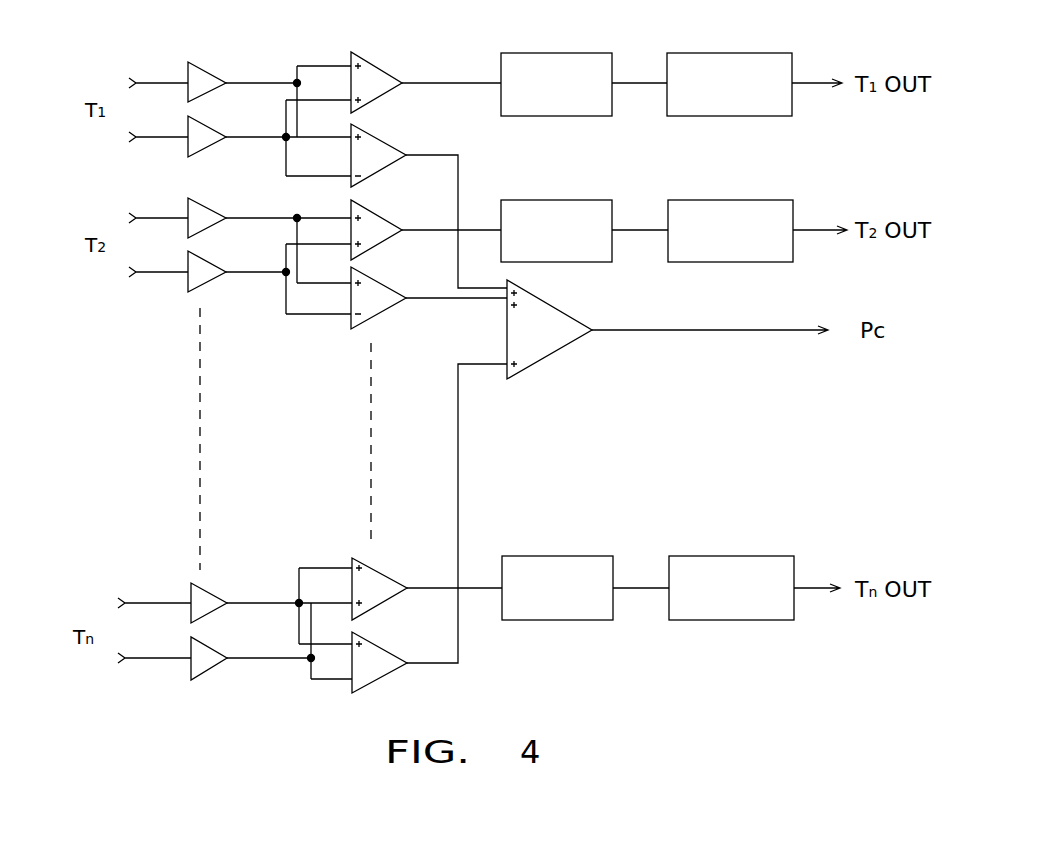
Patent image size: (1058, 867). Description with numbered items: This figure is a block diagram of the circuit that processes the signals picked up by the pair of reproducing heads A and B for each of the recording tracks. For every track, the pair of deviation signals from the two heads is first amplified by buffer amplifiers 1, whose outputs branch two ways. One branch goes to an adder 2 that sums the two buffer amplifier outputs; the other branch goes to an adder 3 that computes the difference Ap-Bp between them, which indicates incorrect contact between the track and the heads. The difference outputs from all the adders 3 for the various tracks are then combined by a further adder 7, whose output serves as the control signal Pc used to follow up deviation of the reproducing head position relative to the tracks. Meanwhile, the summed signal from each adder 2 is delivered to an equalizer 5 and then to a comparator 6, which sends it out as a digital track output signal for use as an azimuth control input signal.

The buffer amplifier 1 is at (212, 73).
The adder 2 is at (383, 71).
The adder 3 is at (389, 143).
The equalizer 5 is at (613, 75).
The comparator 6 is at (793, 63).
The adder 7 is at (565, 347).